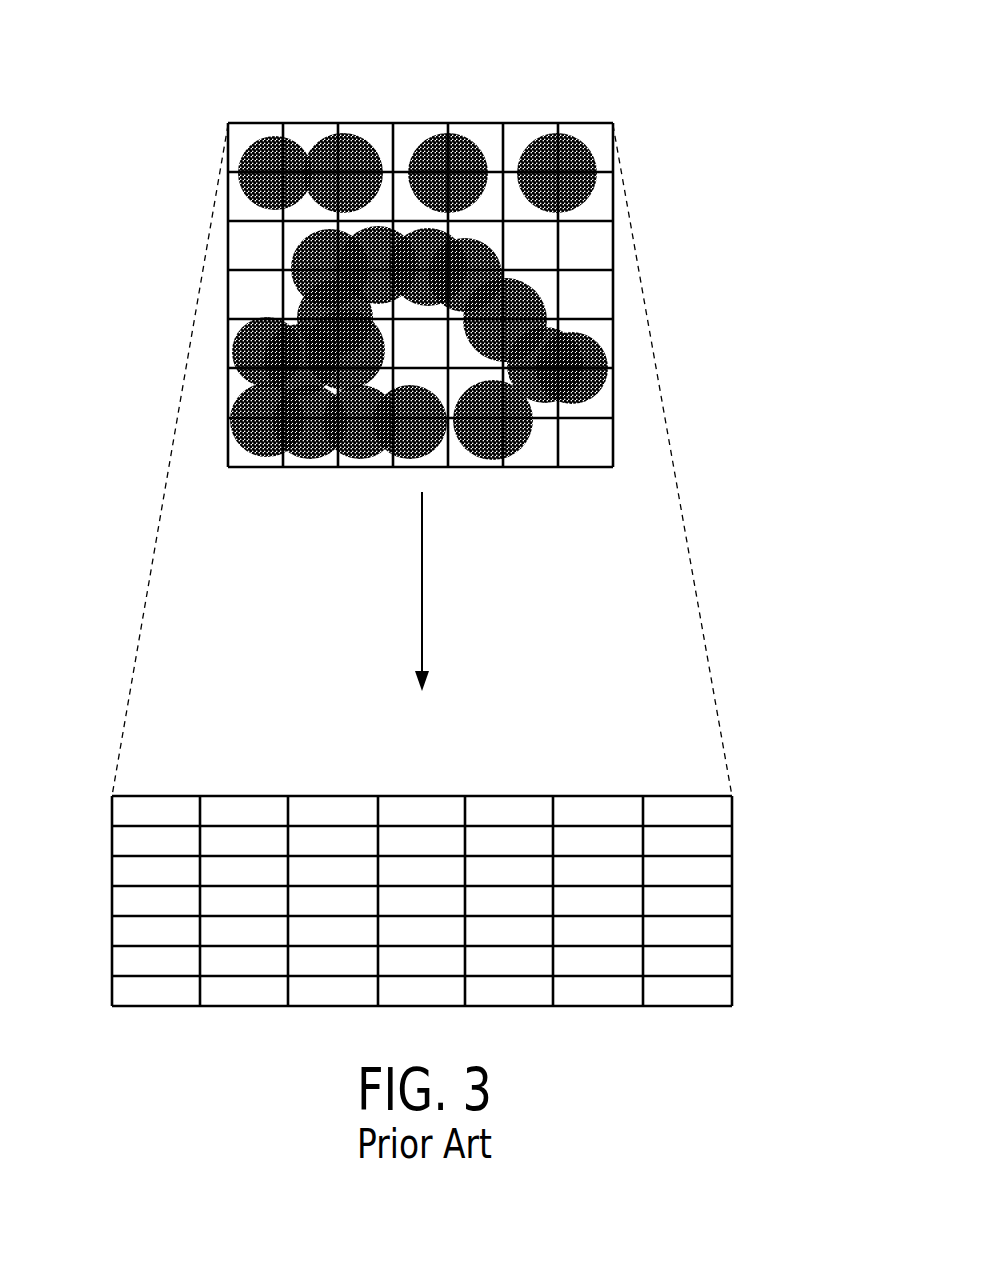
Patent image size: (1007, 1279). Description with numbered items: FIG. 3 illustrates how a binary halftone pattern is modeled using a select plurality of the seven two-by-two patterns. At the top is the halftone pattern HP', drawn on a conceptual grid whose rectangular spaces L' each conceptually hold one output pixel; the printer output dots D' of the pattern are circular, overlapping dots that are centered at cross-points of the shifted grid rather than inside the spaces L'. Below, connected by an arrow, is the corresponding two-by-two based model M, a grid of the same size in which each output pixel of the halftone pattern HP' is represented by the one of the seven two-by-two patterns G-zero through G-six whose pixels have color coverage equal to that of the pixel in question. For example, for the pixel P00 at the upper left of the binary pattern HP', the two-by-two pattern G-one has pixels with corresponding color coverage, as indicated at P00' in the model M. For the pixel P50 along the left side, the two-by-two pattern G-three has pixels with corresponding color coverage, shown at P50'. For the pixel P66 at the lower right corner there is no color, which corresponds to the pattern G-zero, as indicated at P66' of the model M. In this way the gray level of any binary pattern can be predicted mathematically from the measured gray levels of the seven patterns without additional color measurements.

The halftone pattern HP' is at (419, 238).
The rectangular space L' is at (427, 264).
The printer output dot D' is at (542, 266).
The pixel P00 is at (252, 113).
The pixel P50 is at (190, 411).
The pixel P66 is at (649, 435).
The 2×2 based model M is at (435, 871).
The model pixel entry P00' is at (156, 768).
The model pixel entry P50' is at (120, 973).
The model pixel entry P66' is at (725, 1005).